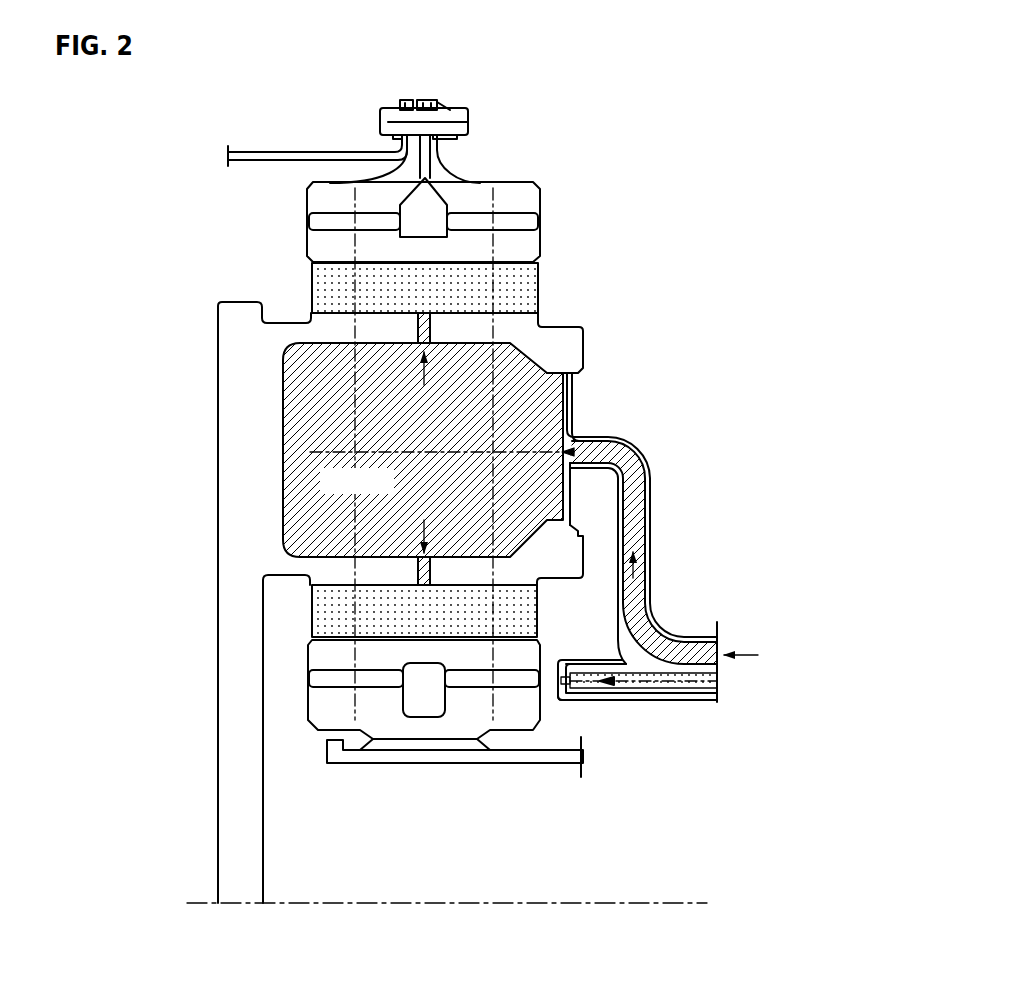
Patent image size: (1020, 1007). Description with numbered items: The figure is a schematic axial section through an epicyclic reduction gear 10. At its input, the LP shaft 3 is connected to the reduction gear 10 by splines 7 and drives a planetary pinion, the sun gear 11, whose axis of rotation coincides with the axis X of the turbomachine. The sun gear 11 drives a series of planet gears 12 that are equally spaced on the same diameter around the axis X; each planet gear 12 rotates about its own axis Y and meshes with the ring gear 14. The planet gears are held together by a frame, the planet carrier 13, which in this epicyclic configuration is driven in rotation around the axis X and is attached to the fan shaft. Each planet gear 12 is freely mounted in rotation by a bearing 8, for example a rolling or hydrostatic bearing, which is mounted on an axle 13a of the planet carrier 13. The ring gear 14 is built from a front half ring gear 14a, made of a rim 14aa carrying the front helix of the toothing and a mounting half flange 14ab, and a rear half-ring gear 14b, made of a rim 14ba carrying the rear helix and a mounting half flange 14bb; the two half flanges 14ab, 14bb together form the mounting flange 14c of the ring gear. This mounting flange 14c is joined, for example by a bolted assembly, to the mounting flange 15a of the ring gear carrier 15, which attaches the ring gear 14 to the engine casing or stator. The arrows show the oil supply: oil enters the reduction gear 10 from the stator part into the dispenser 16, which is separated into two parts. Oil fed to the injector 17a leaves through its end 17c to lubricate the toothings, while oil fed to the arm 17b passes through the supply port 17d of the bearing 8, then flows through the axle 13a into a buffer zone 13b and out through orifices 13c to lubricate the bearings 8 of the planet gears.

The reduction gear 10 is at (678, 266).
The ring gear carrier 15 is at (270, 150).
The mounting flange of the ring gear carrier 15a is at (402, 102).
The ring gear 14 is at (540, 185).
The mounting flange of the ring gear 14c is at (436, 38).
The mounting half flange 14ab is at (420, 101).
The mounting half flange 14bb is at (434, 101).
The rim 14aa is at (333, 192).
The rim 14ba is at (481, 192).
The front half ring gear 14a is at (321, 198).
The rear half-ring gear 14b is at (522, 203).
The bearing 8 is at (530, 289).
The planet carrier 13 is at (565, 335).
The buffer zone 13b is at (423, 450).
The orifices 13c is at (425, 326).
The axle 13a is at (571, 558).
The axis Y is at (565, 440).
The supply port 17d is at (574, 382).
The arm 17b is at (644, 508).
The injector 17a is at (667, 690).
The end 17c is at (558, 702).
The dispenser 16 is at (712, 603).
The planet gear 12 is at (318, 662).
The sun gear 11 is at (316, 698).
The splines 7 is at (400, 742).
The LP shaft 3 is at (547, 757).
The axis X is at (664, 900).